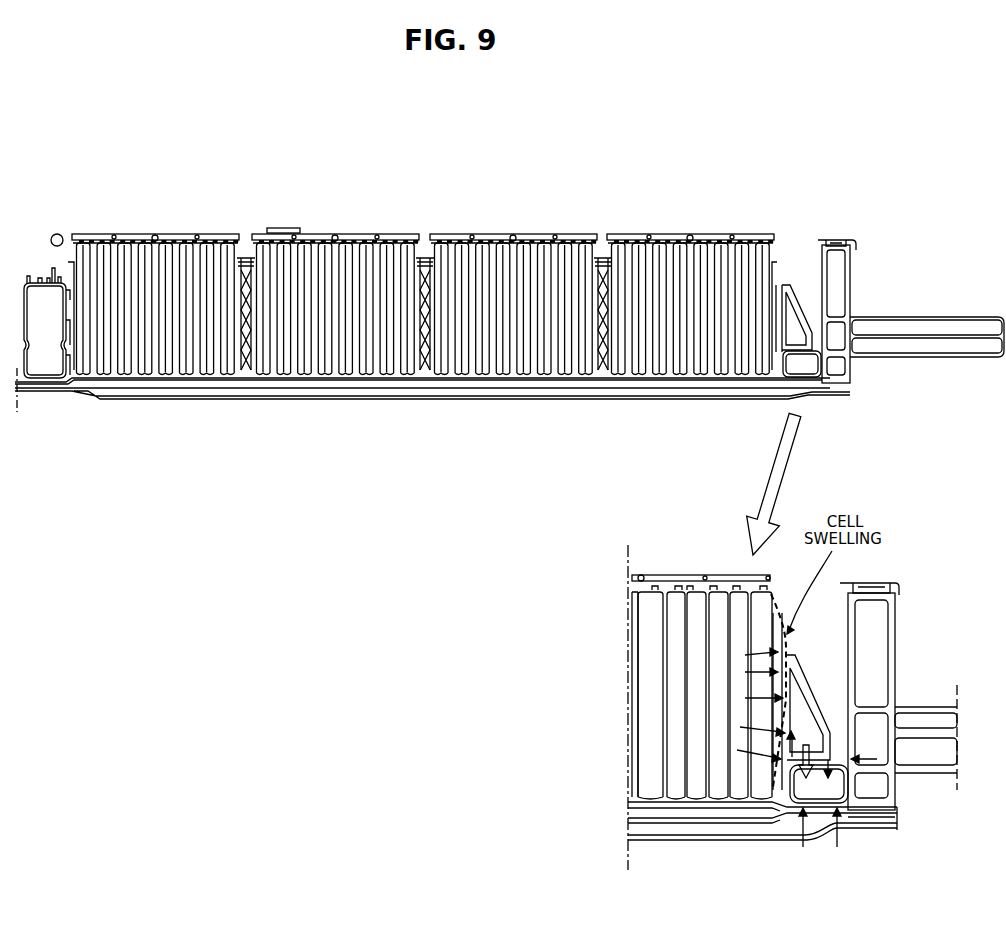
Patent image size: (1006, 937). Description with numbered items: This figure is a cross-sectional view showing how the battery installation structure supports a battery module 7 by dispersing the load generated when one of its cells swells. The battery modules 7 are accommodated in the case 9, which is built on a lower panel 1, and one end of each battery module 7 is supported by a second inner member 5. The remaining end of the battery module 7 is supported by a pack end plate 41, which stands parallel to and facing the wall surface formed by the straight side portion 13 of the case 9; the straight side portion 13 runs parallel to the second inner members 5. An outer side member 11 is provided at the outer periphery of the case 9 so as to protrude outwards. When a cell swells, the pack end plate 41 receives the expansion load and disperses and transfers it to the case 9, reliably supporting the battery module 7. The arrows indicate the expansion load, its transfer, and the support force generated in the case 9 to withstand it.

The lower panel 1 is at (836, 384).
The second inner member 5 is at (64, 283).
The battery module 7 is at (183, 226).
The case 9 is at (893, 293).
The outer side member 11 is at (927, 306).
The straight side portion 13 is at (860, 262).
The pack end plate 41 is at (792, 282).